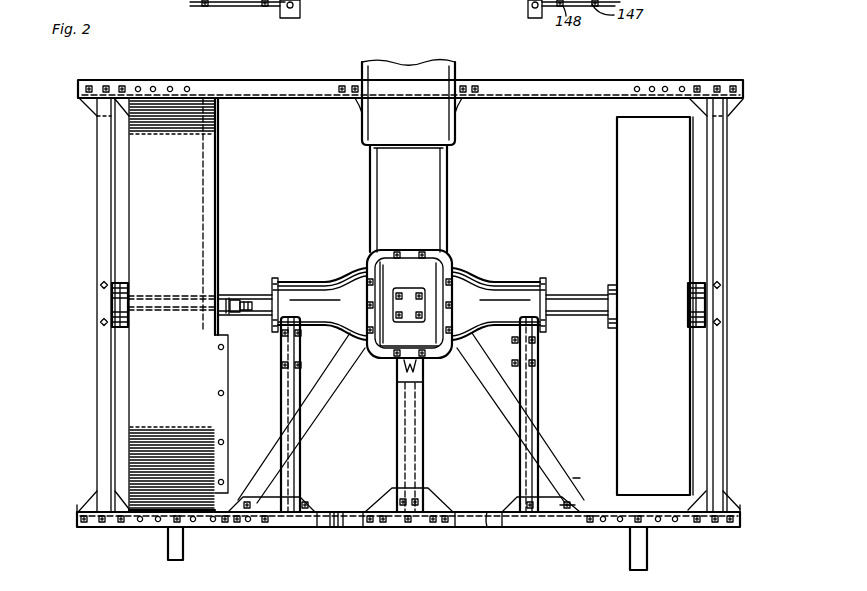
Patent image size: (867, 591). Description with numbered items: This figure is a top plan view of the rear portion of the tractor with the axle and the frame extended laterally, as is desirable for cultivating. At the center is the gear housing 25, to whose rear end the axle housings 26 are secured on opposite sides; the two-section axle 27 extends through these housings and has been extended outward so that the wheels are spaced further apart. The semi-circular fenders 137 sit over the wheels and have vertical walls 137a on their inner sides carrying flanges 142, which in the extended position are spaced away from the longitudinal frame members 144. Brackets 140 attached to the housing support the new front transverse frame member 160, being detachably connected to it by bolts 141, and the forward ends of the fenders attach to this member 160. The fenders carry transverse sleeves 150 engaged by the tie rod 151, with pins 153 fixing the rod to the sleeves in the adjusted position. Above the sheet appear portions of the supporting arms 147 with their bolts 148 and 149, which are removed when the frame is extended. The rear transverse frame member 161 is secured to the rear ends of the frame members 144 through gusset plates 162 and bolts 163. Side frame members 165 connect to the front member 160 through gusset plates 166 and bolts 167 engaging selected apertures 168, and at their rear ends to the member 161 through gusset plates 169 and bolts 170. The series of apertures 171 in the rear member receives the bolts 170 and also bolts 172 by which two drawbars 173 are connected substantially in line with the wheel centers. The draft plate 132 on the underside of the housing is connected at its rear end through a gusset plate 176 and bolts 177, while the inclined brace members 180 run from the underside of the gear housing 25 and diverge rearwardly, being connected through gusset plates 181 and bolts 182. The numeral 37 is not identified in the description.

The central gear housing 25 is at (428, 196).
The axle housing 26 is at (487, 290).
The axle 27 is at (562, 295).
The fuel tank 37 is at (622, 187).
The draft plate 132 is at (405, 437).
The fender 137 is at (170, 181).
The vertical wall 137a is at (218, 208).
The bracket 140 is at (460, 80).
The bolt 141 is at (463, 93).
The flange 142 is at (220, 379).
The longitudinal frame member 144 is at (520, 470).
The arm 147 is at (250, 4).
The bolt 148 is at (226, 22).
The bolt 149 is at (528, 8).
The transverse sleeve 150 is at (234, 300).
The tie rod 151 is at (249, 301).
The pin 153 is at (236, 314).
The frame member 160 is at (517, 98).
The rear transverse frame member 161 is at (465, 528).
The gusset plate 162 is at (520, 505).
The bolt 163 is at (560, 540).
The side frame member 165 is at (733, 322).
The gusset plate 166 is at (731, 103).
The bolt 167 is at (733, 85).
The aperture 168 is at (665, 86).
The gusset plate 169 is at (728, 507).
The bolt 170 is at (742, 517).
The aperture 171 is at (658, 523).
The bolt 172 is at (635, 521).
The drawbar 173 is at (632, 560).
The gusset plate 176 is at (423, 493).
The bolt 177 is at (408, 523).
The inclined brace member 180 is at (555, 458).
The gusset plate 181 is at (566, 508).
The bolt 182 is at (576, 477).